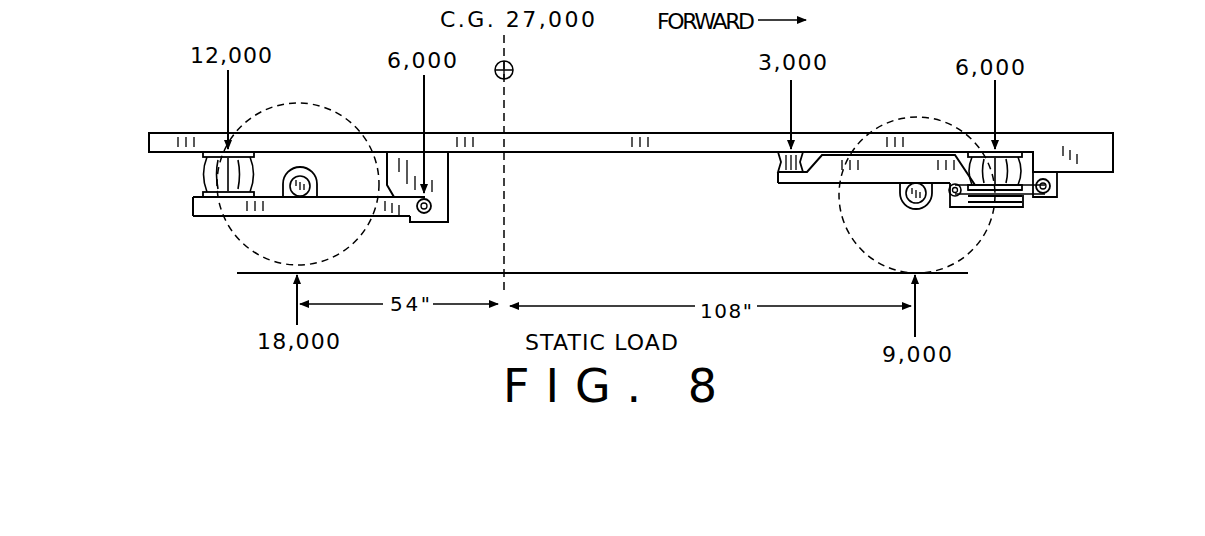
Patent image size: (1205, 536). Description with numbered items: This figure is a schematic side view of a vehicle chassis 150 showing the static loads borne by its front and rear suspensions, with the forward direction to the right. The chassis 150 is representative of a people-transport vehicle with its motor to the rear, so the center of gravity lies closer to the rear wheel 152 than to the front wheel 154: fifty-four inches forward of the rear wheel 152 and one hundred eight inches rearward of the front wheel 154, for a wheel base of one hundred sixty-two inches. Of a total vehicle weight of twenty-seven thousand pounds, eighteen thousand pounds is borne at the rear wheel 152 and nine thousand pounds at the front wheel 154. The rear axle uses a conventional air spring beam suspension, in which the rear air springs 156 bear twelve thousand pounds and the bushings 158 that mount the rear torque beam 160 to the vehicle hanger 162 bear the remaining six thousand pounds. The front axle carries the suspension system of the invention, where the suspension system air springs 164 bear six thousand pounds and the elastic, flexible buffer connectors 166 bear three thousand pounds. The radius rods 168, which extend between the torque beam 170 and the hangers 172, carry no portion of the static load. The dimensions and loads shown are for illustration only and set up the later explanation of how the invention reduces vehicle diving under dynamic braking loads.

The chassis 150 is at (603, 133).
The rear wheel 152 is at (228, 240).
The front wheel 154 is at (990, 240).
The rear air springs 156 is at (205, 168).
The bushings 158 is at (428, 212).
The rear torque beam 160 is at (382, 212).
The vehicle hanger 162 is at (440, 188).
The suspension system air springs 164 is at (1013, 152).
The elastic, flexible buffer connectors 166 is at (778, 162).
The radius rods 168 is at (1023, 195).
The torque beam 170 is at (865, 175).
The hangers 172 is at (1057, 183).